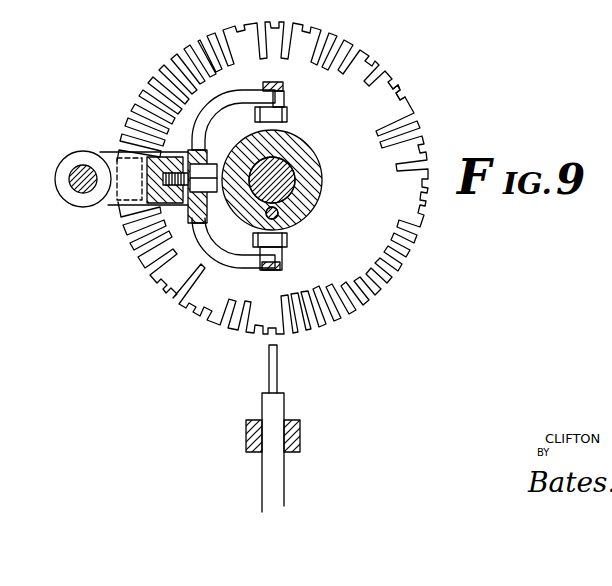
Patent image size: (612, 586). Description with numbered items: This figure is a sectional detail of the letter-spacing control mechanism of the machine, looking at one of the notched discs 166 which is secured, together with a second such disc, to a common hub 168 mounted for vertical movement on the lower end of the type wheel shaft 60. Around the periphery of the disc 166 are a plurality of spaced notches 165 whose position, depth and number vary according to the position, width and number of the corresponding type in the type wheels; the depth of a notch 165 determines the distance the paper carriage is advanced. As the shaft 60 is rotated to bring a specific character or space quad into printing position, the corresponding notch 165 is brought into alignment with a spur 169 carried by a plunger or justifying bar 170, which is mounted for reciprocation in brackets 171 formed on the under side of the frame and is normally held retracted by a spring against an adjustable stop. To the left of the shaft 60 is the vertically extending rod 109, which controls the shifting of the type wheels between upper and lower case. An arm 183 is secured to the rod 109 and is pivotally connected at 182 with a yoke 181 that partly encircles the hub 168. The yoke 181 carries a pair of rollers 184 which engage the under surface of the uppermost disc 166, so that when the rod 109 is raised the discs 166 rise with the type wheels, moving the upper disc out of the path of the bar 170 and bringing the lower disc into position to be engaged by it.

The notches 165 is at (170, 72).
The disc 166 is at (392, 97).
The type wheel shaft 60 is at (293, 151).
The hub 168 is at (302, 170).
The yoke 181 is at (200, 208).
The rollers 184 is at (287, 111).
The rod 109 is at (72, 163).
The arm 183 is at (108, 206).
The pivotal connection 182 is at (138, 207).
The spur 169 is at (278, 369).
The justifying bar 170 is at (285, 406).
The brackets 171 is at (300, 429).